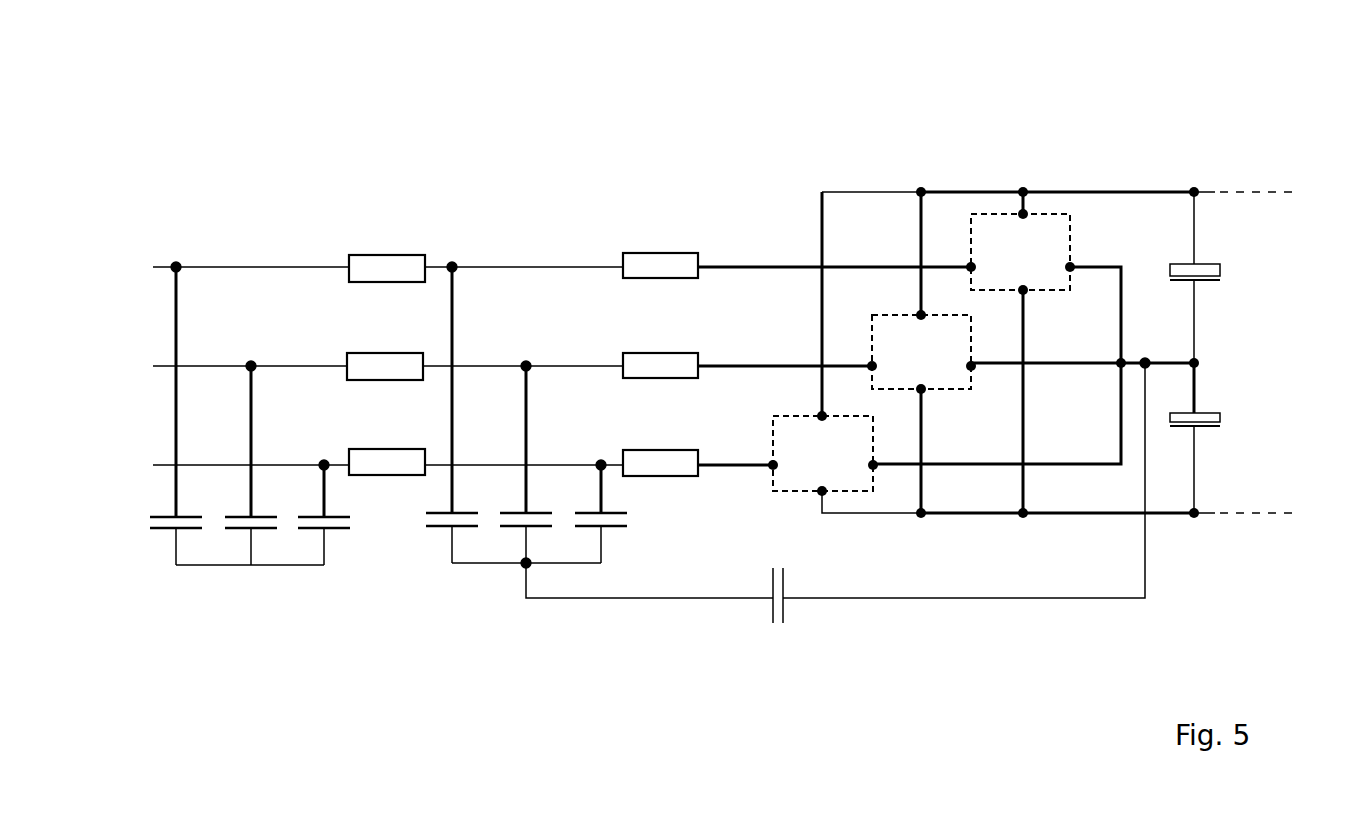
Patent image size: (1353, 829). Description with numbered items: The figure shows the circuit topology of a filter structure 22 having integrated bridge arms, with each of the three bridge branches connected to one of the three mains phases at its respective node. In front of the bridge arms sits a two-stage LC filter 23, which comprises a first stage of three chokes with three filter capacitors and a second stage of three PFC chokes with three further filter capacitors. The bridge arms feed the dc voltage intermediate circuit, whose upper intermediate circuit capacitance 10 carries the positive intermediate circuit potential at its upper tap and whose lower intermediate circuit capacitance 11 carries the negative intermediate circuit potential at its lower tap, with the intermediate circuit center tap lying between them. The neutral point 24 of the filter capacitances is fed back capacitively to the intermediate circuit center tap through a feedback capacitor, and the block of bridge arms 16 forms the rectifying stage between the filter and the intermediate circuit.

The intermediate circuit capacitance 10 is at (1235, 280).
The intermediate circuit capacitance 11 is at (1228, 435).
The rectifier / power converter stage 16 is at (1045, 177).
The filter structure 22 is at (586, 172).
The two-stage LC filter 23 is at (418, 566).
The star point connection 24 is at (522, 567).